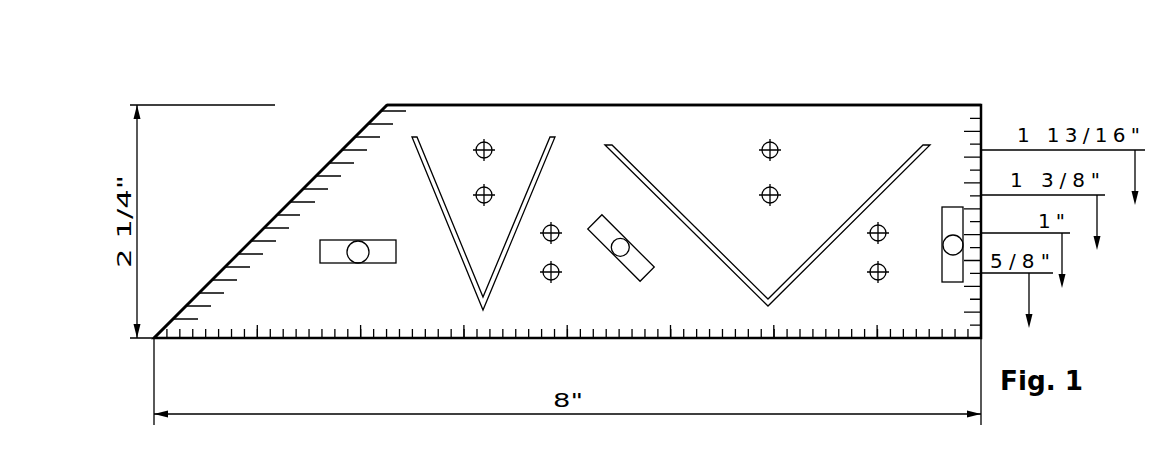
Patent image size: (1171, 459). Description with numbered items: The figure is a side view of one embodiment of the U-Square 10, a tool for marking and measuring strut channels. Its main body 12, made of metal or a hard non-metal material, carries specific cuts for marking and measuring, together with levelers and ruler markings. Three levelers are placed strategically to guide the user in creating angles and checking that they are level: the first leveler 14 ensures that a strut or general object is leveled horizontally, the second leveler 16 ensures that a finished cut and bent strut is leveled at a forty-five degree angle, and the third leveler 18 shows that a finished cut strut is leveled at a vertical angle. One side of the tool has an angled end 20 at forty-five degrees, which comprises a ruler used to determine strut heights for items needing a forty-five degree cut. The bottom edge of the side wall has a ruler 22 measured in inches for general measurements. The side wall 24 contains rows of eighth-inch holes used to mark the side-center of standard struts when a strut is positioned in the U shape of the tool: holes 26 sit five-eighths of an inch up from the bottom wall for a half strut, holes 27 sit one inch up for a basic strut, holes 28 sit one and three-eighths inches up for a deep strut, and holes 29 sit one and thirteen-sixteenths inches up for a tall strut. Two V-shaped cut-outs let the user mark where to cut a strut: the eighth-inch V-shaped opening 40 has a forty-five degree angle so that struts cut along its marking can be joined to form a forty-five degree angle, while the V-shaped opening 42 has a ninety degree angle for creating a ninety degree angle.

The U-Square 10 is at (345, 83).
The main body 12 is at (362, 187).
The first leveler 14 is at (383, 265).
The second leveler 16 is at (637, 267).
The third leveler 18 is at (948, 265).
The angled end 20 is at (254, 238).
The ruler 22 is at (258, 340).
The side wall 24 is at (652, 132).
The holes 26 is at (557, 278).
The holes 27 is at (546, 240).
The holes 28 is at (478, 191).
The holes 29 is at (489, 142).
The V-shaped opening 40 is at (552, 135).
The V-shaped opening 42 is at (615, 143).